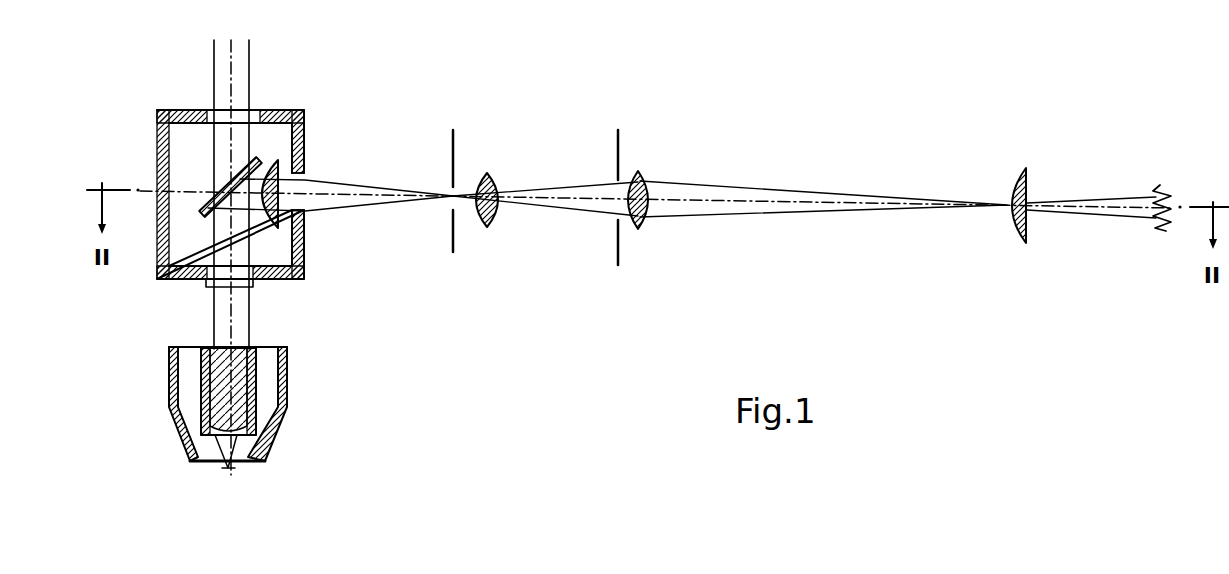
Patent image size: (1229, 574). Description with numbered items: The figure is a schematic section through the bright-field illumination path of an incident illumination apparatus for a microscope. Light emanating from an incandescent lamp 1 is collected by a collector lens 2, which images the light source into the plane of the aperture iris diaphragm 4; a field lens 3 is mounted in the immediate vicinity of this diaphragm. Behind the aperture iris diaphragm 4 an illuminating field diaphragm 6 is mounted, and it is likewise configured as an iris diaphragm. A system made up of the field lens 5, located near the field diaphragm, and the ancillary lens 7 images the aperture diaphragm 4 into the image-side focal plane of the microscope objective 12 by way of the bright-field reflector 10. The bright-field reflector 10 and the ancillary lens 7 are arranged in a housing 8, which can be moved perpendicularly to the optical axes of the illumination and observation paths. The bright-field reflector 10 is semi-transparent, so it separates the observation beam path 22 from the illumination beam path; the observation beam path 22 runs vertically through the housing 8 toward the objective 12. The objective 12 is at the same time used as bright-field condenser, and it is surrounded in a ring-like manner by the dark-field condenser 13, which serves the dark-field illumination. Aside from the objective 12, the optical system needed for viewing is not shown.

The incandescent lamp 1 is at (1160, 185).
The collector lens 2 is at (1017, 170).
The field lens 3 is at (641, 172).
The aperture iris diaphragm 4 is at (618, 130).
The field lens 5 is at (486, 173).
The illuminating field diaphragm 6 is at (453, 130).
The ancillary lens 7 is at (273, 225).
The housing 8 is at (305, 150).
The bright-field reflector 10 is at (201, 212).
The microscope objective 12 is at (238, 352).
The dark-field condenser 13 is at (288, 403).
The observation beam path 22 is at (242, 62).